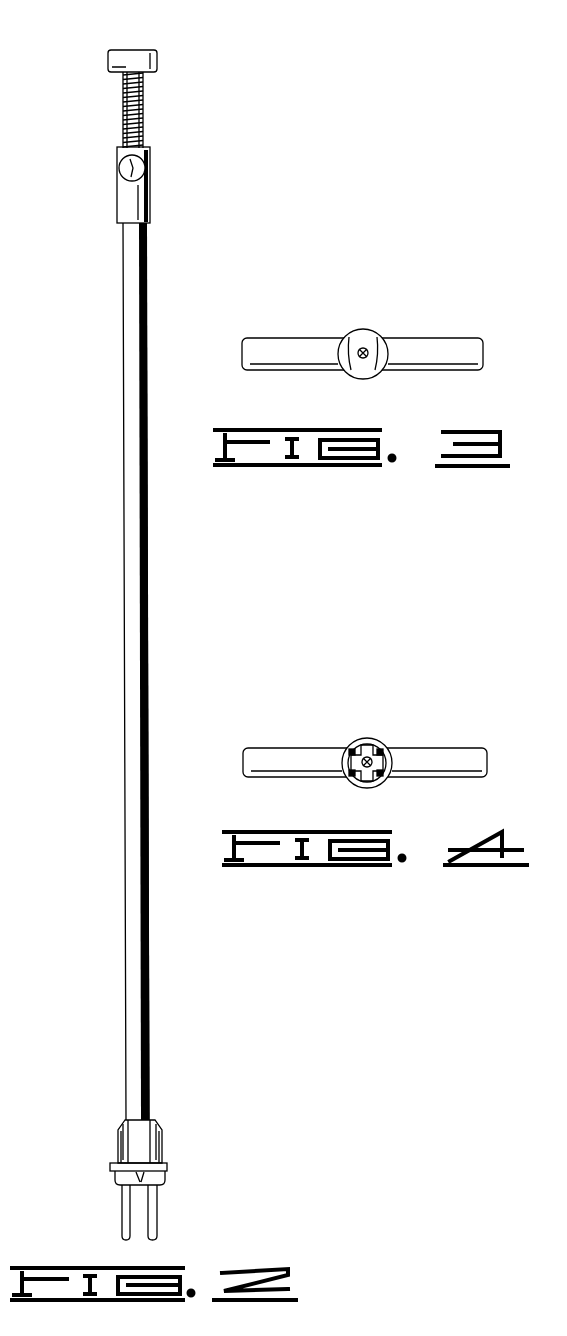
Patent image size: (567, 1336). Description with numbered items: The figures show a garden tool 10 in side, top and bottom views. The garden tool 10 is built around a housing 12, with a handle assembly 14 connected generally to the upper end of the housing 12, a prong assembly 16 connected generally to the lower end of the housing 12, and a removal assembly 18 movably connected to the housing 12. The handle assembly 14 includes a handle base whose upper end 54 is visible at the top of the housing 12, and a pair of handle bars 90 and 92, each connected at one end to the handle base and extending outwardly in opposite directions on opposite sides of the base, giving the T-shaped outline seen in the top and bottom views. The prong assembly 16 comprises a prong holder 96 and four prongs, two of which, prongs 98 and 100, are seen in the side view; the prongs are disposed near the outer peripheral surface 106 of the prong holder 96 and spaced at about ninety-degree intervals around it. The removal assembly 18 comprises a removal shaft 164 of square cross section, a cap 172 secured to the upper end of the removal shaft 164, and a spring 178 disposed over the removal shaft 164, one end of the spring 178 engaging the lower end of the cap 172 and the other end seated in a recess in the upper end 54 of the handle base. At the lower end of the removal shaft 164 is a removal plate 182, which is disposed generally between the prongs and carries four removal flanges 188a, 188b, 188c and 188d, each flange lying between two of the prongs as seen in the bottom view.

In FIG. 2, the garden tool 10 is at (153, 321).
In FIG. 3, the garden tool 10 is at (364, 316).
In FIG. 4, the garden tool 10 is at (368, 715).
In FIG. 2, the housing 12 is at (150, 597).
In FIG. 3, the handle assembly 14 is at (295, 334).
In FIG. 4, the handle assembly 14 is at (413, 744).
In FIG. 2, the prong assembly 16 is at (162, 1133).
In FIG. 4, the prong assembly 16 is at (336, 780).
In FIG. 2, the removal assembly 18 is at (168, 1175).
In FIG. 4, the removal assembly 18 is at (368, 790).
In FIG. 2, the upper end 54 is at (150, 212).
In FIG. 2, the handle bar 90 is at (147, 165).
In FIG. 3, the handle bar 90 is at (300, 357).
In FIG. 4, the handle bar 90 is at (300, 752).
In FIG. 3, the handle bar 92 is at (430, 355).
In FIG. 4, the handle bar 92 is at (458, 752).
In FIG. 2, the prong holder 96 is at (118, 1148).
In FIG. 2, the prong 98 is at (157, 1216).
In FIG. 2, the prong 100 is at (122, 1216).
In FIG. 2, the outer peripheral surface 106 is at (110, 1167).
In FIG. 2, the removal shaft 164 is at (122, 108).
In FIG. 2, the cap 172 is at (152, 58).
In FIG. 3, the cap 172 is at (376, 330).
In FIG. 2, the spring 178 is at (123, 130).
In FIG. 2, the removal plate 182 is at (152, 1180).
In FIG. 4, the removal plate 182 is at (383, 782).
In FIG. 4, the removal flange 188a is at (355, 750).
In FIG. 4, the removal flange 188b is at (375, 742).
In FIG. 4, the removal flange 188c is at (393, 765).
In FIG. 4, the removal flange 188d is at (352, 778).